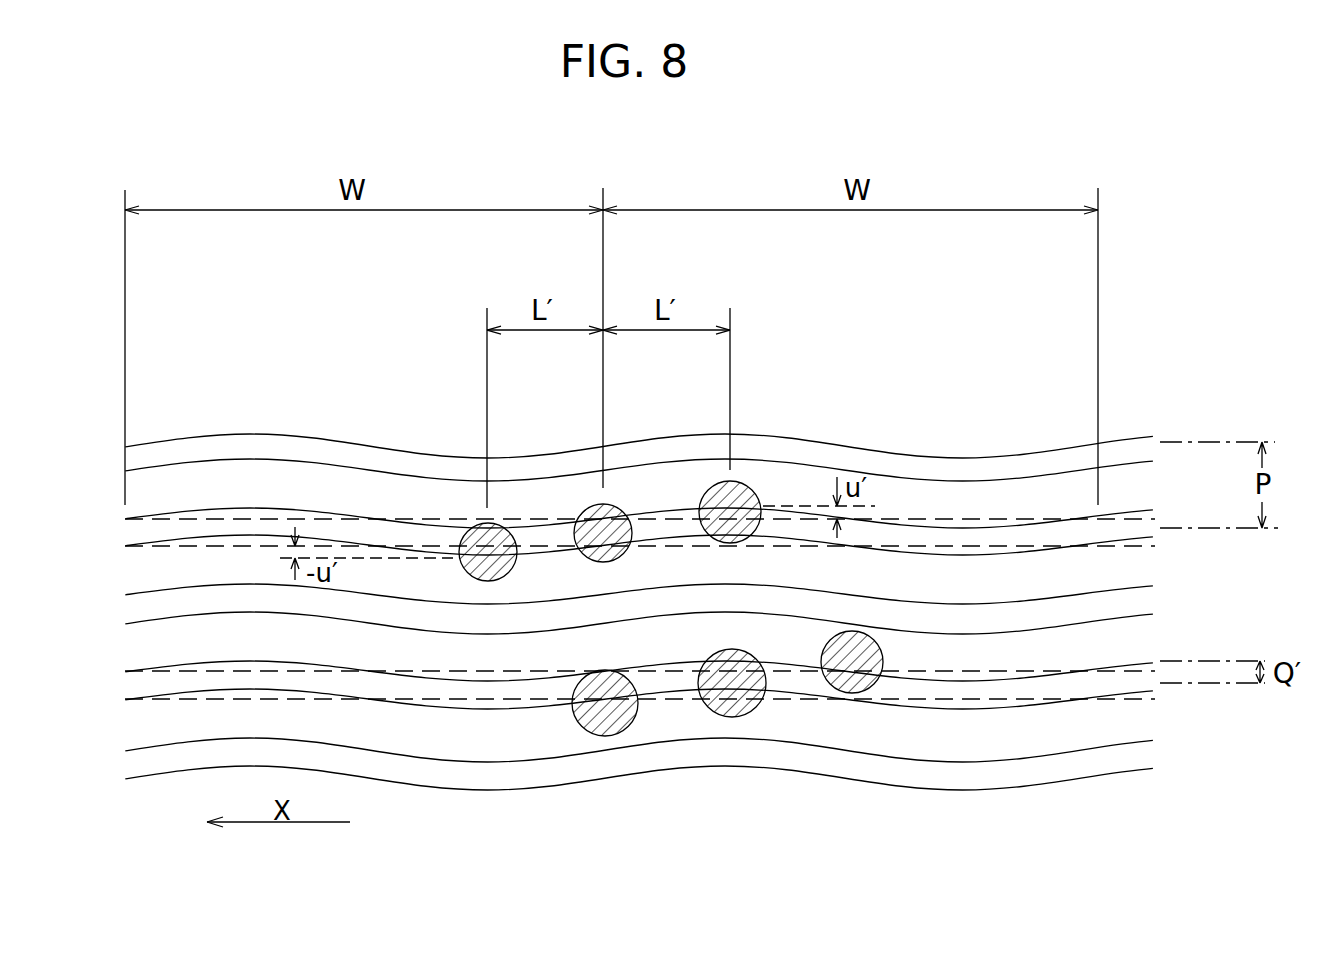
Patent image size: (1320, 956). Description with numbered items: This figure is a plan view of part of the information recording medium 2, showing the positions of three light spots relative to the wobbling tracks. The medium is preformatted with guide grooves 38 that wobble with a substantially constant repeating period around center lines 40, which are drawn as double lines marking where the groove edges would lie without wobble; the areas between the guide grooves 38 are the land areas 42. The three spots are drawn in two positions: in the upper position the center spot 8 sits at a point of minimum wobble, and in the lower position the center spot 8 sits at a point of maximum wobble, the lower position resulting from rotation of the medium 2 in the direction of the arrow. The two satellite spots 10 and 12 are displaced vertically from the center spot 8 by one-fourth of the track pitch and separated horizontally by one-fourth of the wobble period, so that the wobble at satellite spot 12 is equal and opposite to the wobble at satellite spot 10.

The information recording medium 2 is at (107, 782).
The center spot 8 is at (627, 508).
The satellite spot 10 is at (502, 524).
The satellite spot 12 is at (758, 486).
The guide grooves 38 is at (232, 437).
The center lines 40 is at (432, 522).
The land areas 42 is at (315, 483).